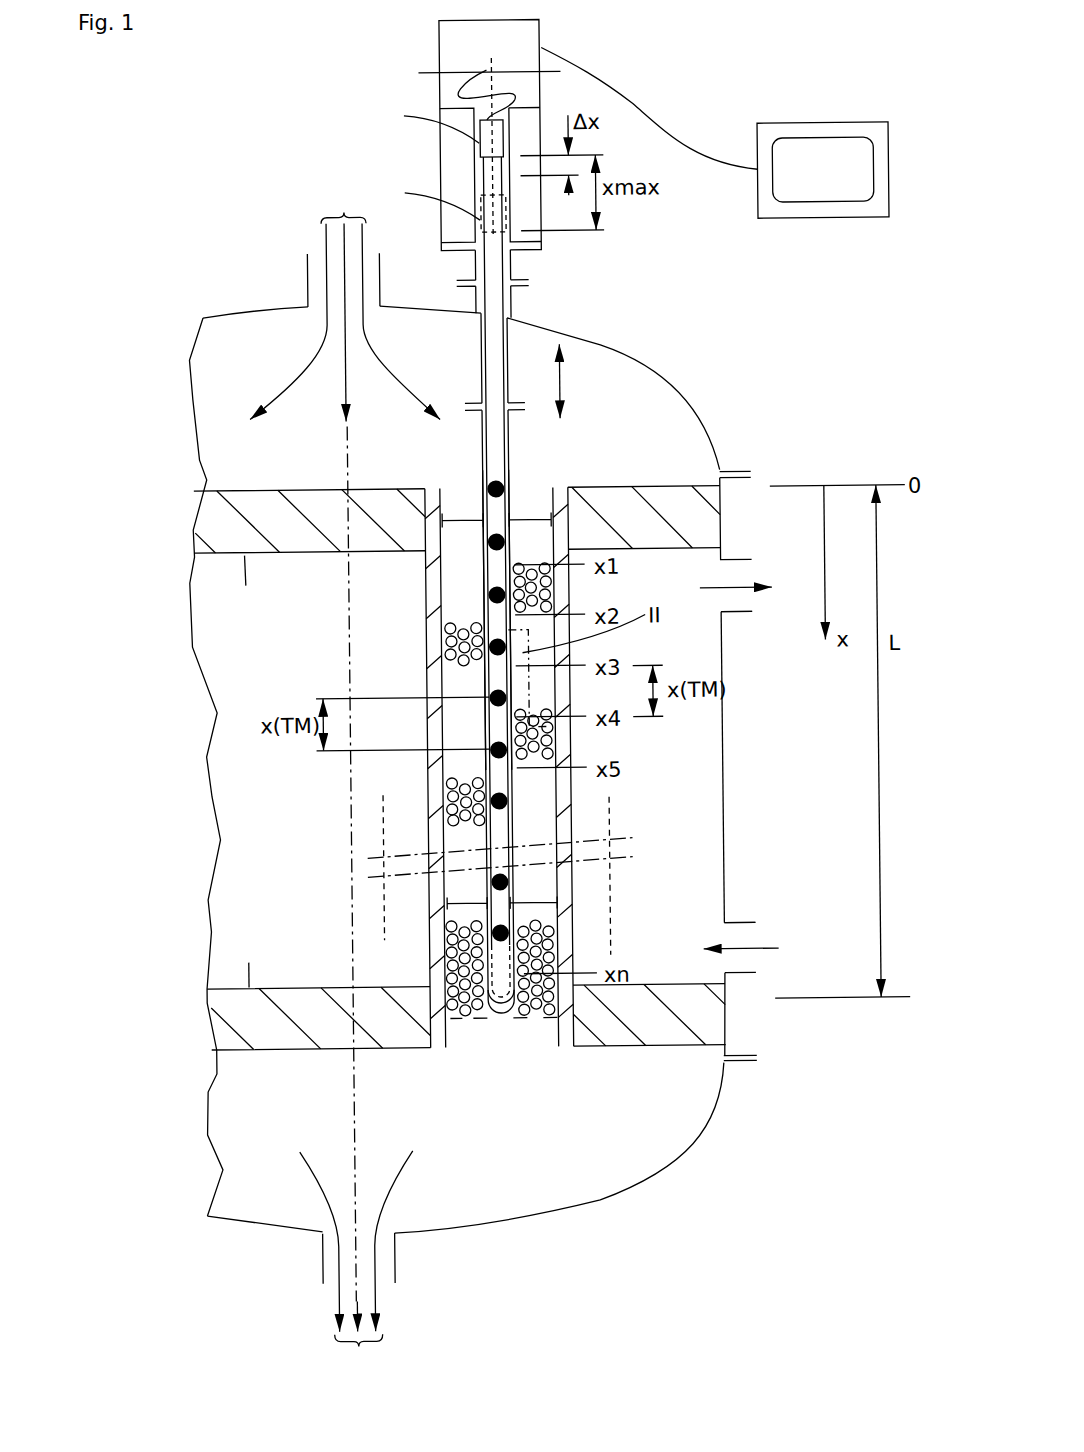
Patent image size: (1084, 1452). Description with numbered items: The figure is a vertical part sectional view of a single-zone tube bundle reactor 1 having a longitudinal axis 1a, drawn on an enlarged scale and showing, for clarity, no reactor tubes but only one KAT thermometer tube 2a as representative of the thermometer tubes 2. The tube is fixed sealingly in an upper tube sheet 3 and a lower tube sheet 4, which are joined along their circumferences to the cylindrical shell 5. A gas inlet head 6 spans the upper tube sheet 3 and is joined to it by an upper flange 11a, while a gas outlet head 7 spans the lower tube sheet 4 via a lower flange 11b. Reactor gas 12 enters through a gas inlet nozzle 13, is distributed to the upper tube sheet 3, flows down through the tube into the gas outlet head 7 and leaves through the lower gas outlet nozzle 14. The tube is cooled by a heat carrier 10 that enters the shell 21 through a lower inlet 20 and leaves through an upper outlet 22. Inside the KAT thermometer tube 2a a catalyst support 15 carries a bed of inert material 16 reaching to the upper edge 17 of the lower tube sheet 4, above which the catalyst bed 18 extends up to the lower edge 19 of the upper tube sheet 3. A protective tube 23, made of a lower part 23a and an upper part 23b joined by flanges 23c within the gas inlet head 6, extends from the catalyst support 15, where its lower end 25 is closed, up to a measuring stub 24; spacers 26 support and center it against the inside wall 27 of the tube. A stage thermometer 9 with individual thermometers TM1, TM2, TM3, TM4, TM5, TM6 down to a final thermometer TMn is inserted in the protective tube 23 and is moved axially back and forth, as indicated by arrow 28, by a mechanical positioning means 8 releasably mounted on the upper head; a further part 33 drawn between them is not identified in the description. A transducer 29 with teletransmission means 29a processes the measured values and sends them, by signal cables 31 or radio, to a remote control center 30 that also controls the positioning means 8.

The tube bundle reactor 1 is at (194, 221).
The longitudinal axis 1a is at (347, 467).
The thermometer tube 2 is at (570, 797).
The KAT thermometer tube 2a is at (435, 768).
The upper tube sheet 3 is at (228, 518).
The lower tube sheet 4 is at (232, 1020).
The shell 5 is at (722, 848).
The gas inlet head 6 is at (660, 372).
The gas outlet head 7 is at (612, 1198).
The mechanical positioning means 8 is at (444, 160).
The stage thermometer 9 is at (500, 447).
The heat carrier 10 is at (742, 590).
The upper flange 11a is at (736, 474).
The lower flange 11b is at (744, 1066).
The reactor gas 12 is at (348, 212).
The gas inlet nozzle 13 is at (311, 285).
The lower gas outlet nozzle 14 is at (389, 1262).
The catalyst support 15 is at (454, 1019).
The bed of inert material 16 is at (466, 1019).
The upper edge of the lower tube sheet 17 is at (242, 964).
The catalyst bed 18 is at (570, 948).
The lower edge of the upper tube sheet 19 is at (248, 585).
The lower inlet 20 is at (742, 925).
The shell 21 is at (678, 908).
The upper outlet 22 is at (735, 616).
The protective tube 23 is at (511, 470).
The lower part of the protective tube 23a is at (484, 465).
The upper part of the protective tube 23b is at (484, 365).
The flanges 23c is at (470, 403).
The measuring stub 24 is at (516, 313).
The lower end of the protective tube 25 is at (511, 1017).
The spacers 26 is at (527, 512).
The inside wall of the thermometer tube 27 is at (548, 495).
The arrow 28 is at (502, 376).
The transducer 29 is at (533, 30).
The teletransmission means 29a is at (490, 150).
The remote control center 30 is at (824, 126).
The signal cables 31 is at (633, 99).
The connecting tube 33 is at (516, 268).
The first thermometer TM1 is at (486, 492).
The second thermometer TM2 is at (486, 545).
The third thermometer TM3 is at (486, 597).
The fourth thermometer TM4 is at (486, 649).
The fifth thermometer TM5 is at (486, 700).
The sixth thermometer TM6 is at (486, 752).
The final thermometer TMn is at (494, 935).